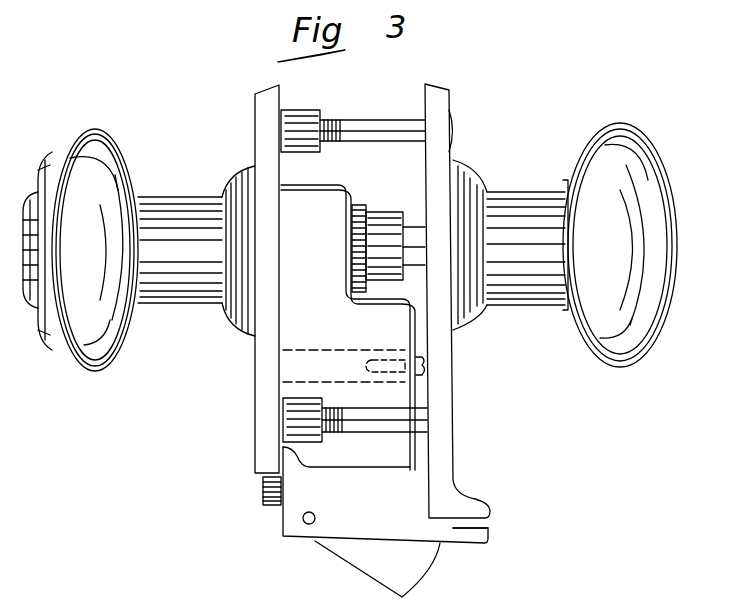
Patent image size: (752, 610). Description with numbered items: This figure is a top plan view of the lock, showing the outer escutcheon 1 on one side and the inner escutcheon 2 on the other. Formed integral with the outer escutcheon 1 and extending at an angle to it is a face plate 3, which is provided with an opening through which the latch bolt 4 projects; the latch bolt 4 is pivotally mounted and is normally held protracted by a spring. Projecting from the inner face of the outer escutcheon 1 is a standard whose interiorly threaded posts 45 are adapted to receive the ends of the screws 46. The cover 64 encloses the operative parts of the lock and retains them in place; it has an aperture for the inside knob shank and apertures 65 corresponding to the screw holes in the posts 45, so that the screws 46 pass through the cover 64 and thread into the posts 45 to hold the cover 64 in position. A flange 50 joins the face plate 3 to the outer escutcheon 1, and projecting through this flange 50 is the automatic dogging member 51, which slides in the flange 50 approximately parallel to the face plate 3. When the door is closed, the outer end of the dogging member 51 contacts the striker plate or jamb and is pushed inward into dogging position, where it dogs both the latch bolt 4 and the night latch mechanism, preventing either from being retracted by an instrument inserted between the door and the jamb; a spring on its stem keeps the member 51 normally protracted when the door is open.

The outer escutcheon 1 is at (256, 121).
The inner escutcheon 2 is at (457, 365).
The face plate 3 is at (478, 536).
The latch bolt 4 is at (387, 565).
The interiorly threaded posts 45 is at (305, 366).
The screws 46 is at (410, 361).
The flange 50 is at (287, 512).
The automatic dogging member 51 is at (262, 487).
The cover 64 is at (390, 399).
The apertures 65 is at (425, 371).